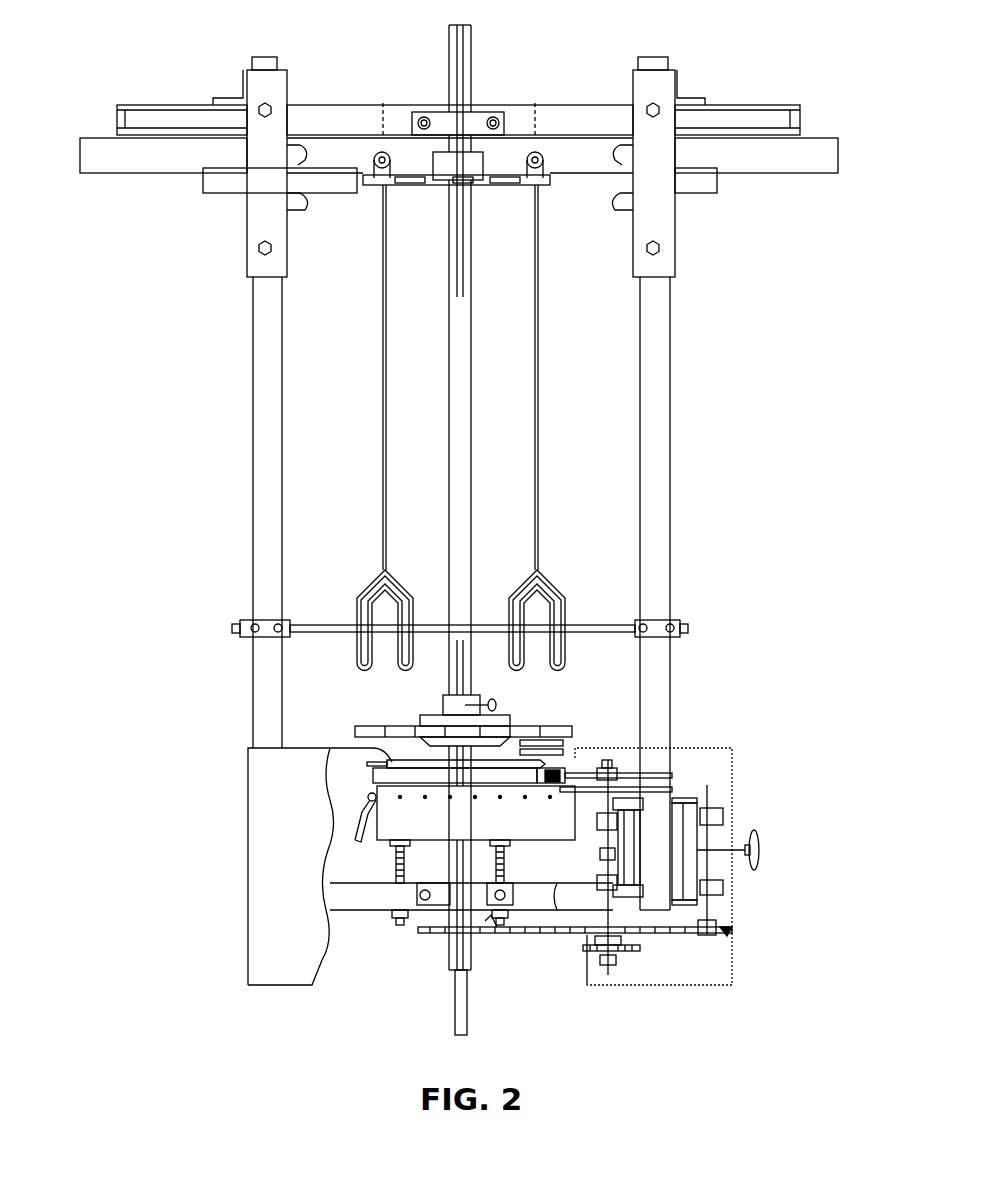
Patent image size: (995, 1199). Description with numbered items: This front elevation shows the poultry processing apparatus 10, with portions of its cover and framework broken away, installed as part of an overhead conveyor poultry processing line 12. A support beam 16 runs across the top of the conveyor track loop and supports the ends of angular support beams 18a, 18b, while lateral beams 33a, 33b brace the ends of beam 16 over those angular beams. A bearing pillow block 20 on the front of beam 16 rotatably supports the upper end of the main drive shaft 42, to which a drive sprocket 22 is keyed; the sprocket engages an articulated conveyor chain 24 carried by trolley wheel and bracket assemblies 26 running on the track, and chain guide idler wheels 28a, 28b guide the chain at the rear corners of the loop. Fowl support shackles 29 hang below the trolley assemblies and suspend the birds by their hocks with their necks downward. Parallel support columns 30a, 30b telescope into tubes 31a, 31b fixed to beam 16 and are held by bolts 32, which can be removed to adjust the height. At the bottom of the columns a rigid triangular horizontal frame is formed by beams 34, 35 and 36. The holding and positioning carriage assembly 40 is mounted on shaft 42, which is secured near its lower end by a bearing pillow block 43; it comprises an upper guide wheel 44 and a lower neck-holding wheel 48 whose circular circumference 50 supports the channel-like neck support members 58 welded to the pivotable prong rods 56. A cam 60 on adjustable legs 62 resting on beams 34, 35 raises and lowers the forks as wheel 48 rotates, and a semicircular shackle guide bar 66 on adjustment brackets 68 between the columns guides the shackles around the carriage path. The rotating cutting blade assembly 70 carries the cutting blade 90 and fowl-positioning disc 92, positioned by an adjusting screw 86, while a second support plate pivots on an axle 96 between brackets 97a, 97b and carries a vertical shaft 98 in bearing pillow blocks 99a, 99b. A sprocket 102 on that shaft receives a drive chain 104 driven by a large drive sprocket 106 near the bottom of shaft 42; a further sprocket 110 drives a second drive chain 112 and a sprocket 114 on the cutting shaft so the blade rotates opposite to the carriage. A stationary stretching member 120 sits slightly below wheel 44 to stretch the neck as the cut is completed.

The poultry processing apparatus 10 is at (238, 426).
The overhead conveyor poultry processing line 12 is at (113, 160).
The support beam 16 is at (333, 112).
The angular support beam 18a is at (157, 122).
The angular support beam 18b is at (747, 123).
The bearing pillow block 20 is at (458, 123).
The drive sprocket 22 is at (513, 190).
The conveyor chain 24 is at (432, 190).
The trolley wheel and bracket assemblies 26 is at (383, 152).
The chain guide idler wheel 28a is at (223, 185).
The chain guide idler wheel 28b is at (705, 183).
The fowl support shackles 29 is at (383, 405).
The support column 30a is at (272, 518).
The support column 30b is at (660, 497).
The tube 31a is at (275, 87).
The tube 31b is at (660, 87).
The bolts 32 is at (265, 118).
The lateral beam 33a is at (228, 98).
The lateral beam 33b is at (697, 98).
The beam 34 is at (353, 897).
The beam 35 is at (385, 902).
The beam 36 is at (657, 900).
The holding and positioning carriage assembly 40 is at (338, 723).
The main drive shaft 42 is at (462, 360).
The bearing pillow block 43 is at (440, 897).
The upper guide wheel 44 is at (538, 725).
The lower neck-holding wheel 48 is at (387, 763).
The circular circumference 50 is at (372, 778).
The prong rods 56 is at (355, 837).
The neck support member 58 is at (370, 797).
The cam 60 is at (550, 829).
The adjustable legs 62 is at (407, 858).
The shackle guide bar 66 is at (490, 623).
The adjustment brackets 68 is at (258, 622).
The rotating cutting blade assembly 70 is at (628, 762).
The adjusting screw 86 is at (763, 853).
The cutting blade 90 is at (675, 775).
The fowl-positioning disc 92 is at (673, 787).
The axle 96 is at (690, 838).
The bracket 97a is at (700, 802).
The bracket 97b is at (732, 933).
The vertical shaft 98 is at (708, 910).
The bearing pillow block 99a is at (720, 817).
The bearing pillow block 99b is at (722, 887).
The sprocket 102 is at (723, 925).
The drive chain 104 is at (542, 933).
The drive sprocket 106 is at (488, 920).
The sprocket 110 is at (593, 955).
The drive chain 112 is at (647, 950).
The sprocket 114 is at (647, 937).
The stretching member 120 is at (577, 735).